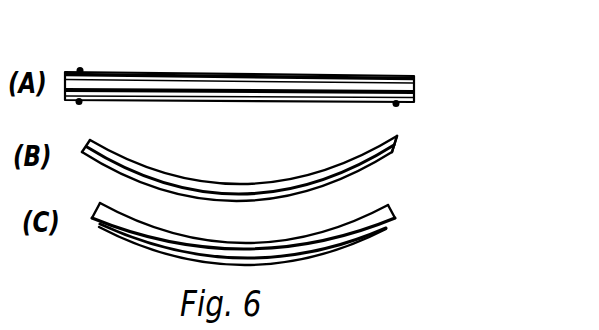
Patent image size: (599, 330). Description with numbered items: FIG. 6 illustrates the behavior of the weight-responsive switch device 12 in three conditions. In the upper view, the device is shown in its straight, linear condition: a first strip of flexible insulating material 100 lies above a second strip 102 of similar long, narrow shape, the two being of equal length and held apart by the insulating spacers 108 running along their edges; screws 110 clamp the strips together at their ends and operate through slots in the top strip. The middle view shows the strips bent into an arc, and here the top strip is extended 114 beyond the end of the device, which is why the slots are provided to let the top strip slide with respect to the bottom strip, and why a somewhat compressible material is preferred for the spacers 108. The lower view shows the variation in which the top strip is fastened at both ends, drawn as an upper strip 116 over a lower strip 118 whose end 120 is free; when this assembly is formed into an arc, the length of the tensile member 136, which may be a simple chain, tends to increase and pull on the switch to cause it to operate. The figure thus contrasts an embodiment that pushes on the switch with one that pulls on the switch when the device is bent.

The laminated bimetal strip 12 is at (313, 64).
The first strip of flexible insulating material 100 is at (163, 72).
The second strip 102 is at (277, 100).
The insulating spacers 108 is at (234, 88).
The screws 110 is at (79, 67).
The extension of top strip 114 is at (399, 138).
The upper curved strip 116 is at (218, 246).
The lower curved strip 118 is at (320, 258).
The lower strip layer 120 is at (388, 228).
The tensile member 136 is at (262, 246).